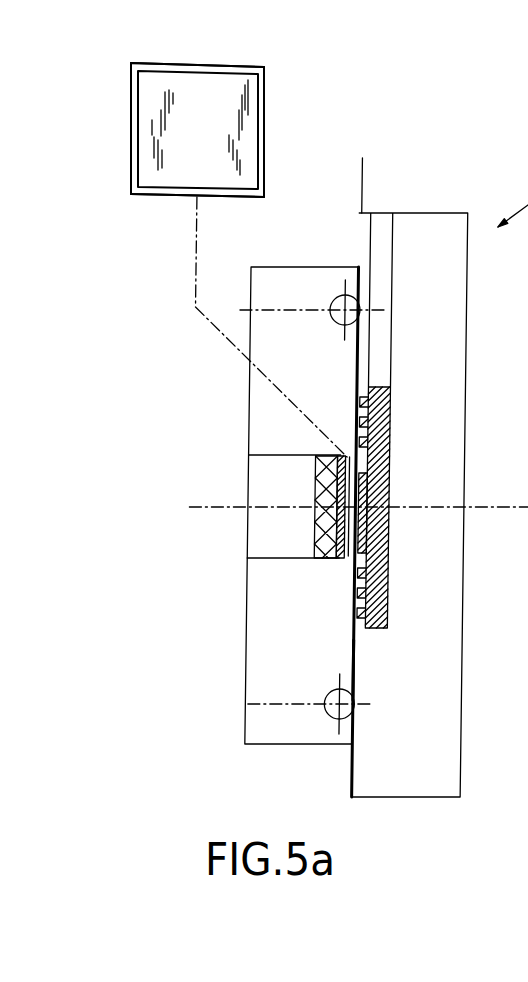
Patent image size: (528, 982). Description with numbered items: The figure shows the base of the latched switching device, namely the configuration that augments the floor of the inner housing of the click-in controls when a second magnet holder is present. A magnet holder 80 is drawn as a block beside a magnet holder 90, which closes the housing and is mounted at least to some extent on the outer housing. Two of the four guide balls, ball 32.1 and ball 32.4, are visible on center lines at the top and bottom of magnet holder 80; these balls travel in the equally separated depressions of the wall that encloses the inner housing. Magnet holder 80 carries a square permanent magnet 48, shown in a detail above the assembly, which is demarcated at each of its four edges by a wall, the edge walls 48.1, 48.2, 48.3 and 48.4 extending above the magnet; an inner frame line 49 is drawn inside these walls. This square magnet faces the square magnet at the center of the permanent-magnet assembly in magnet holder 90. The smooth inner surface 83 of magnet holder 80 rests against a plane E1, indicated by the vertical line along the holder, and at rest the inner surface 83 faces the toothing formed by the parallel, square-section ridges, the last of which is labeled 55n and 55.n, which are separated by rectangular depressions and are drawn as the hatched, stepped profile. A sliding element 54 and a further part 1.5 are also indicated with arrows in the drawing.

The measuring device 1.5 is at (218, 645).
The ball 32.1 is at (332, 303).
The ball 32.4 is at (333, 712).
The permanent magnet 48 is at (290, 113).
The edge wall 48.1 is at (267, 142).
The edge wall 48.2 is at (167, 197).
The edge wall 48.3 is at (131, 138).
The edge wall 48.4 is at (228, 52).
The frame 49 is at (265, 172).
The toothed rack 54 is at (352, 597).
The ridge 55n is at (196, 620).
The ridge 55.n is at (347, 657).
The magnet holder 80 is at (262, 600).
The inner surface 83 is at (357, 672).
The magnet holder 90 is at (460, 745).
The plane E1 is at (363, 188).